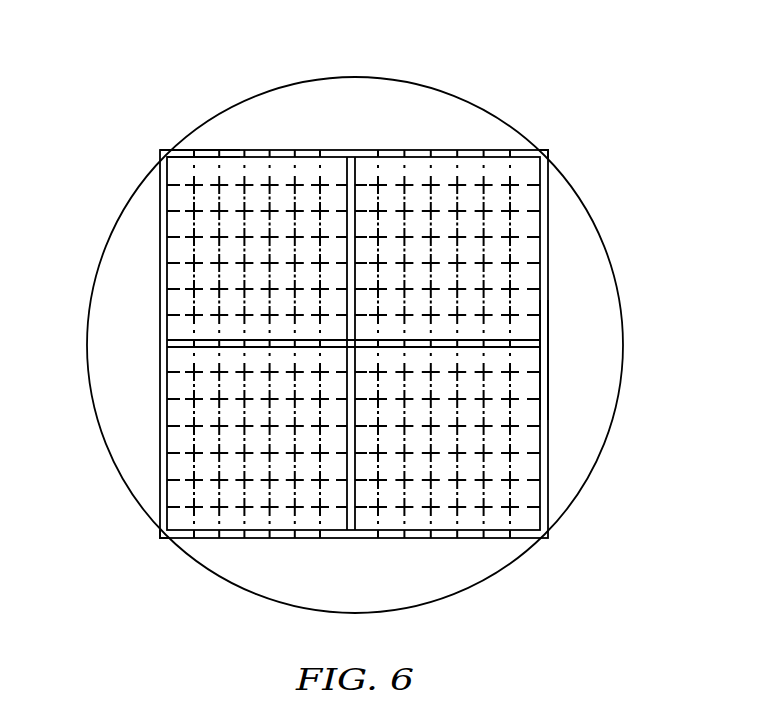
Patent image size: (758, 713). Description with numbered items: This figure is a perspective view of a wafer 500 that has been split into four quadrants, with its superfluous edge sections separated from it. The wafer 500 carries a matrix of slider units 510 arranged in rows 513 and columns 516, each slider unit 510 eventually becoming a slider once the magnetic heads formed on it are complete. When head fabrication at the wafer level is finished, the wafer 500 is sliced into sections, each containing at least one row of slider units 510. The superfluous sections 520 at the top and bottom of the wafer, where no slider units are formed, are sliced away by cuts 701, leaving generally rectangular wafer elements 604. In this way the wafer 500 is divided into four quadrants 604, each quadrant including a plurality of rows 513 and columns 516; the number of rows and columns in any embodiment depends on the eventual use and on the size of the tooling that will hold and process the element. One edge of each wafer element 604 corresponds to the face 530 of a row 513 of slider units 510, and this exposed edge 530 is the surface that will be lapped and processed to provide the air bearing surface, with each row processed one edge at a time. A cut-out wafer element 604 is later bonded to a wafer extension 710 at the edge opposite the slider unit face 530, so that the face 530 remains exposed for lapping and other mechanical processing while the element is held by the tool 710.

The wafer 500 is at (367, 326).
The slider unit 510 is at (235, 153).
The row 513 is at (172, 221).
The column 516 is at (222, 153).
The superfluous section 520 is at (447, 107).
The face 530 is at (228, 152).
The wafer element 604 is at (378, 180).
The cut 701 is at (548, 152).
The wafer extension 710 is at (540, 357).